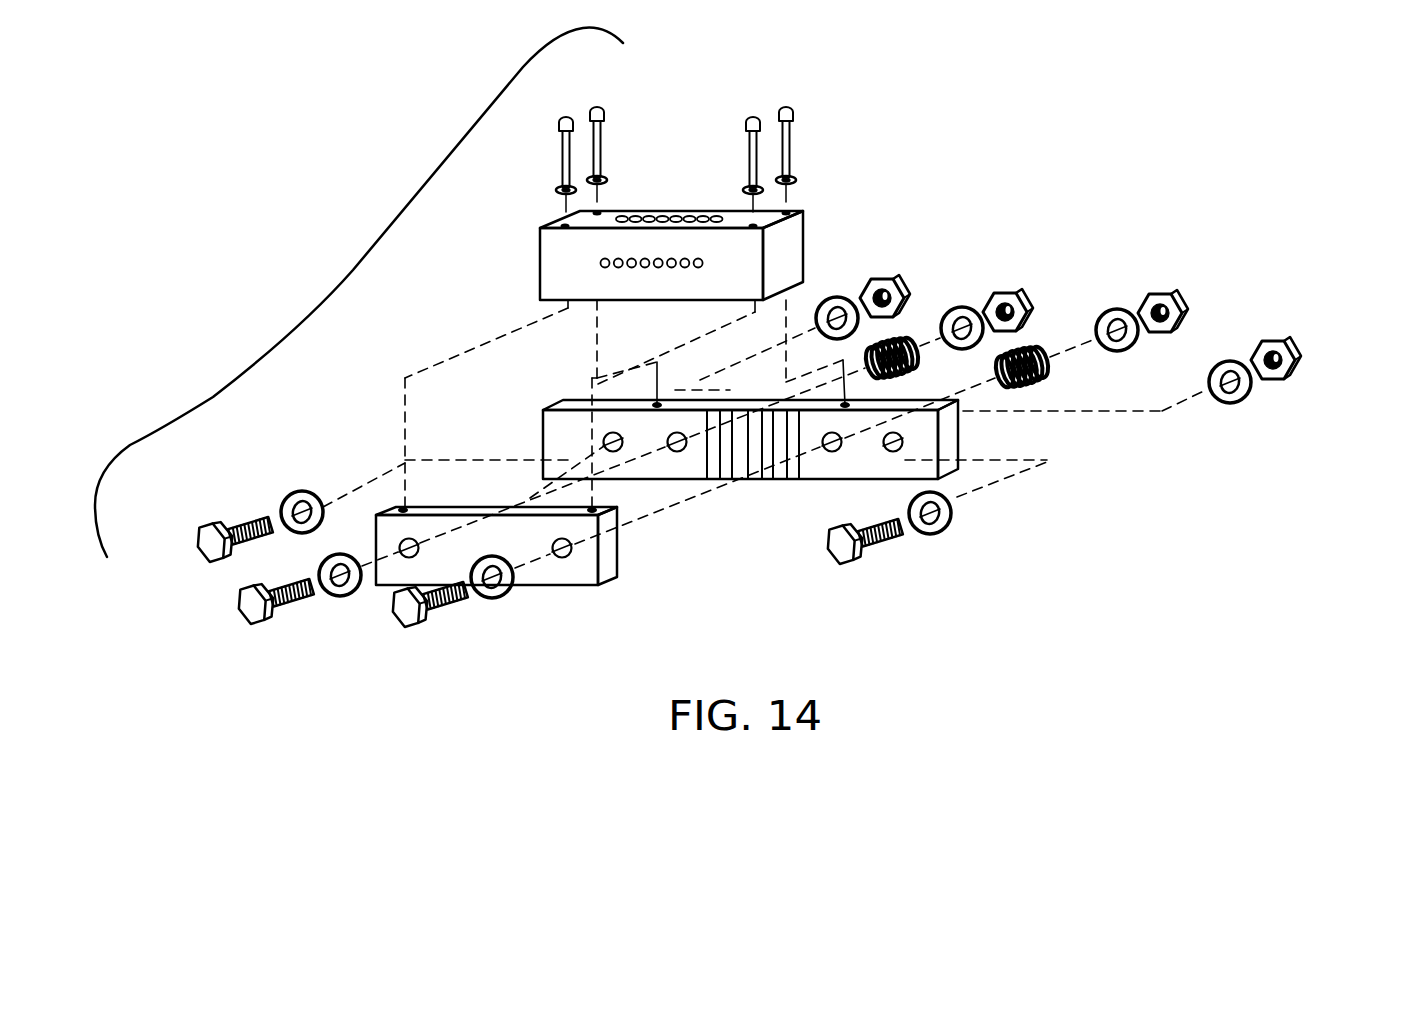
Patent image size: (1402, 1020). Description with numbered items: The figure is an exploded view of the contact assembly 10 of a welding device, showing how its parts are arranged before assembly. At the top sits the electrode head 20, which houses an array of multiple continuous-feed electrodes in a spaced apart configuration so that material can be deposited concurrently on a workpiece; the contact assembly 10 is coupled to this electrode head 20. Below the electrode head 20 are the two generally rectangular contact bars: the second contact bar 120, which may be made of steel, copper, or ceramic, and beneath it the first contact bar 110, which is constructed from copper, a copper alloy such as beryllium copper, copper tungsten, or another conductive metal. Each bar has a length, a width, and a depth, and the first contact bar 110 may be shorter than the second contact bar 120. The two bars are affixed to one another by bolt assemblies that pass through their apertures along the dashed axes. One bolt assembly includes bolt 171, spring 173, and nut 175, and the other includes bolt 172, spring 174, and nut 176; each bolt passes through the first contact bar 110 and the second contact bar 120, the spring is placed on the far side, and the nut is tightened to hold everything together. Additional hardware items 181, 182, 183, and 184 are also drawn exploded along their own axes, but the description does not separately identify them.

The contact assembly 10 is at (353, 270).
The electrode head 20 is at (558, 265).
The first contact bar 110 is at (607, 556).
The second contact bar 120 is at (945, 445).
The bolt 171 is at (420, 610).
The bolt 172 is at (258, 610).
The spring 173 is at (908, 366).
The spring 174 is at (1048, 370).
The nut 175 is at (1177, 296).
The nut 176 is at (1023, 307).
The bolt 181 is at (852, 553).
The bolt 182 is at (223, 545).
The nut 183 is at (1292, 348).
The nut 184 is at (903, 292).